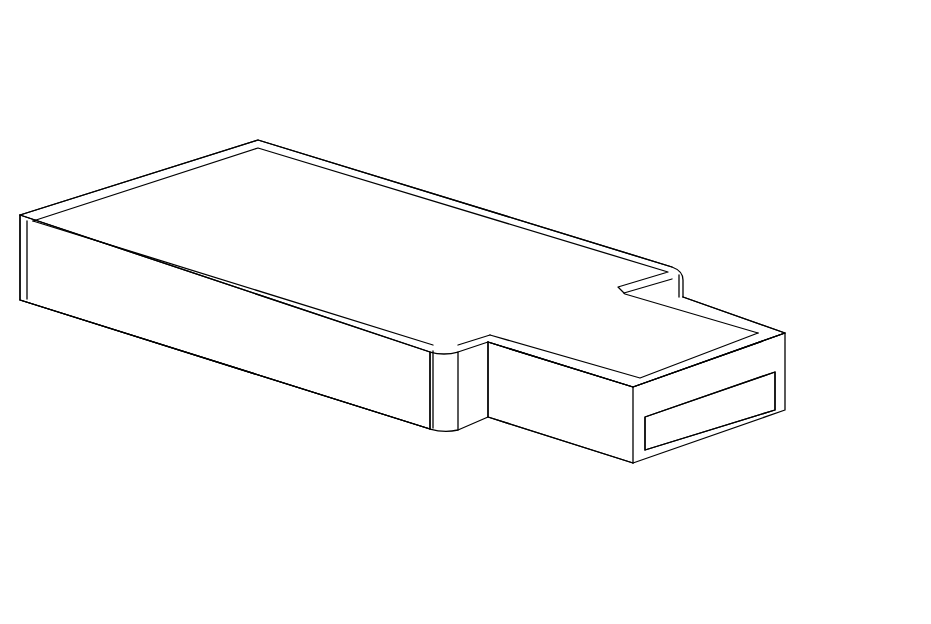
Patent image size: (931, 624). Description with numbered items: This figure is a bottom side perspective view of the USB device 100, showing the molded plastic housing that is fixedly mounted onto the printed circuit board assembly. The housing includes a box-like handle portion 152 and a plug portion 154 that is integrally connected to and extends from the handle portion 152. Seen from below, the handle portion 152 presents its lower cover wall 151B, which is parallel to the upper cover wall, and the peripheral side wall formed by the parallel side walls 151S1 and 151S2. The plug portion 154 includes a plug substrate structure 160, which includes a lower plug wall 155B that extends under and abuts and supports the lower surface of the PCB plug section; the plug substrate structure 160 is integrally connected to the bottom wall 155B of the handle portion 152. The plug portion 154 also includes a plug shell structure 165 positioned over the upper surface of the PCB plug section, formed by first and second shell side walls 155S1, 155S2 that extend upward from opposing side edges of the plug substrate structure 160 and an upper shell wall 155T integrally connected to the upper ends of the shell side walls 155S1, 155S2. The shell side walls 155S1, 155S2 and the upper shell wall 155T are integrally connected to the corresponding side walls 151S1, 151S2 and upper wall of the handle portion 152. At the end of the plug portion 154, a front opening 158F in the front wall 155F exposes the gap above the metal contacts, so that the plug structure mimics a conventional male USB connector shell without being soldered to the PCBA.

The USB device 100 is at (118, 62).
The lower cover wall 151B is at (389, 284).
The side wall 151S1 is at (487, 211).
The side wall 151S2 is at (215, 337).
The handle portion 152 is at (361, 407).
The plug portion 154 is at (589, 448).
The lower plug wall 155B is at (608, 369).
The plug substrate structure 160 is at (608, 369).
The first shell side wall 155S1 is at (693, 307).
The second shell side wall 155S2 is at (607, 368).
The upper shell wall 155T is at (708, 417).
The front wall 155F is at (657, 395).
The front opening 158F is at (740, 403).
The plug shell structure 165 is at (807, 232).